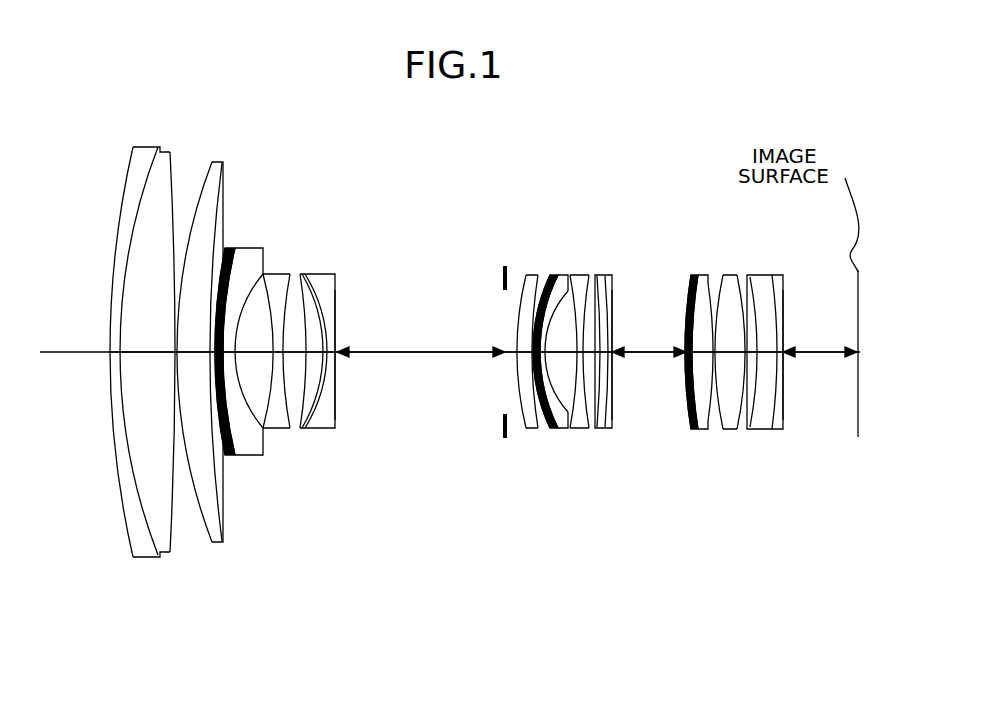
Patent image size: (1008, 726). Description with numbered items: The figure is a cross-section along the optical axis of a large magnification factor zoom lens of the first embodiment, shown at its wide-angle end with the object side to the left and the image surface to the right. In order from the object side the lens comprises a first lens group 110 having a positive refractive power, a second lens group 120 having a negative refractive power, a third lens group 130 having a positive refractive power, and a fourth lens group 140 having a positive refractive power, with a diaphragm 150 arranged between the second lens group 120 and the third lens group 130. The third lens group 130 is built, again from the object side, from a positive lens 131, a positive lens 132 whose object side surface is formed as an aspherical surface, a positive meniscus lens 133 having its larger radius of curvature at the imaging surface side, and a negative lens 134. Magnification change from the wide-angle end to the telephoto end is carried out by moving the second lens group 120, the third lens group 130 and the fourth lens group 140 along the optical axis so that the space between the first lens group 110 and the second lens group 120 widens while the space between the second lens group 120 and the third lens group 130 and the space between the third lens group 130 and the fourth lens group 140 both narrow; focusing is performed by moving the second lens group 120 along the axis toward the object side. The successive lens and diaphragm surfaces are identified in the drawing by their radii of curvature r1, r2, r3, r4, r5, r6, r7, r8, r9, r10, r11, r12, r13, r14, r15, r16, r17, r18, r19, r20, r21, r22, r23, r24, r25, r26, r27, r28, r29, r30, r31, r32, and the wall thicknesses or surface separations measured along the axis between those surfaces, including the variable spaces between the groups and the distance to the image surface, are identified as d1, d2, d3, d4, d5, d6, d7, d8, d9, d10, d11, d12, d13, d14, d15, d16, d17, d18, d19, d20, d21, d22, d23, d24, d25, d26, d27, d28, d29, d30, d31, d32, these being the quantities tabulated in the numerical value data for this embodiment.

The first lens group 110 is at (213, 613).
The second lens group 120 is at (343, 613).
The third lens group 130 is at (615, 611).
The fourth lens group 140 is at (790, 613).
The diaphragm 150 is at (503, 271).
The positive lens 131 is at (496, 312).
The positive lens 132 is at (510, 250).
The positive meniscus lens 133 is at (609, 262).
The negative lens 134 is at (634, 312).
The radius of curvature r1 is at (129, 166).
The radius of curvature r2 is at (154, 166).
The radius of curvature r3 is at (173, 166).
The radius of curvature r4 is at (207, 168).
The radius of curvature r5 is at (220, 163).
The radius of curvature r6 is at (231, 247).
The radius of curvature r7 is at (238, 247).
The radius of curvature r8 is at (247, 300).
The radius of curvature r9 is at (270, 274).
The radius of curvature r10 is at (286, 275).
The radius of curvature r11 is at (299, 274).
The radius of curvature r12 is at (304, 274).
The radius of curvature r13 is at (322, 290).
The radius of curvature r14 is at (336, 297).
The radius of curvature r15 is at (525, 274).
The radius of curvature r16 is at (537, 274).
The radius of curvature r17 is at (549, 274).
The radius of curvature r18 is at (557, 274).
The radius of curvature r19 is at (567, 276).
The radius of curvature r20 is at (572, 274).
The radius of curvature r21 is at (589, 274).
The radius of curvature r22 is at (598, 275).
The radius of curvature r23 is at (606, 275).
The radius of curvature r24 is at (613, 288).
The radius of curvature r25 is at (690, 274).
The radius of curvature r26 is at (698, 274).
The radius of curvature r27 is at (708, 282).
The radius of curvature r28 is at (723, 274).
The radius of curvature r29 is at (737, 274).
The radius of curvature r30 is at (751, 276).
The radius of curvature r31 is at (773, 274).
The radius of curvature r32 is at (785, 297).
The surface separation d1 is at (115, 354).
The surface separation d2 is at (147, 354).
The surface separation d3 is at (170, 354).
The surface separation d4 is at (175, 354).
The surface separation d5 is at (196, 354).
The surface separation d6 is at (219, 354).
The surface separation d7 is at (229, 354).
The surface separation d8 is at (251, 354).
The surface separation d9 is at (278, 354).
The surface separation d10 is at (295, 354).
The surface separation d11 is at (316, 354).
The surface separation d12 is at (325, 354).
The surface separation d13 is at (332, 354).
The surface separation d14 is at (410, 354).
The surface separation d15 is at (511, 353).
The surface separation d16 is at (524, 353).
The surface separation d17 is at (532, 353).
The surface separation d18 is at (537, 353).
The surface separation d19 is at (543, 353).
The surface separation d20 is at (561, 353).
The surface separation d21 is at (580, 353).
The surface separation d22 is at (591, 353).
The surface separation d23 is at (603, 353).
The surface separation d24 is at (655, 354).
The surface separation d25 is at (689, 353).
The surface separation d26 is at (703, 353).
The surface separation d27 is at (714, 353).
The surface separation d28 is at (730, 353).
The surface separation d29 is at (751, 353).
The surface separation d30 is at (767, 353).
The surface separation d31 is at (780, 353).
The surface separation d32 is at (822, 354).